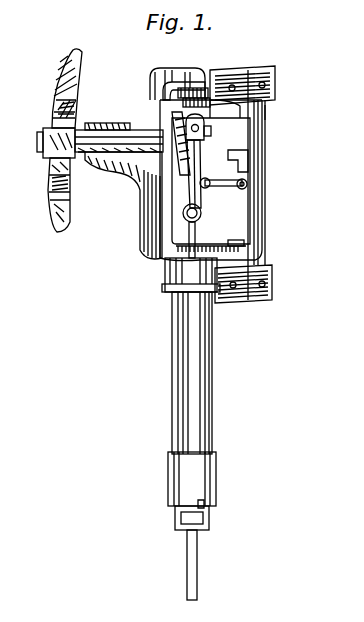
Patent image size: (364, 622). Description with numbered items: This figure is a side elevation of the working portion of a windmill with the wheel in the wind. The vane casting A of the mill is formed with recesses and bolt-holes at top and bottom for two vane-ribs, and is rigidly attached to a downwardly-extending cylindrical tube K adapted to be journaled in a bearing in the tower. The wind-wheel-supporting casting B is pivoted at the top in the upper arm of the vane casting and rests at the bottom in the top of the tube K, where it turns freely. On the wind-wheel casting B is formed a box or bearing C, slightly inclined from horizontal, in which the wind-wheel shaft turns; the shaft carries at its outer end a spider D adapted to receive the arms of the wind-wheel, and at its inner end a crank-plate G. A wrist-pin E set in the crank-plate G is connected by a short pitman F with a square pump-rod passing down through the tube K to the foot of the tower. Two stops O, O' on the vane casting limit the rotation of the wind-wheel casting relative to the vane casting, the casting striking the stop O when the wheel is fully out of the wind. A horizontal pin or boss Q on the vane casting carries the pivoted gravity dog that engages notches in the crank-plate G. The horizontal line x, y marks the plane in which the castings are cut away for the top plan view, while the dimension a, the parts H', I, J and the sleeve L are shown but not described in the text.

The vane casting A is at (262, 190).
The wind-wheel-supporting casting B is at (123, 205).
The box or bearing C is at (118, 128).
The spider D is at (78, 96).
The wrist-pin E is at (211, 136).
The pitman F is at (200, 162).
The crank-plate G is at (184, 196).
The bracket arm H' is at (236, 164).
The link I is at (228, 190).
The frame J is at (217, 234).
The cylindrical tube K is at (198, 362).
The sleeve L is at (206, 475).
The stop O is at (239, 306).
The stop O' is at (183, 275).
The horizontal pin or boss Q is at (246, 188).
The dimension a is at (292, 97).
The section line x y x is at (300, 112).
The section line x y is at (313, 107).